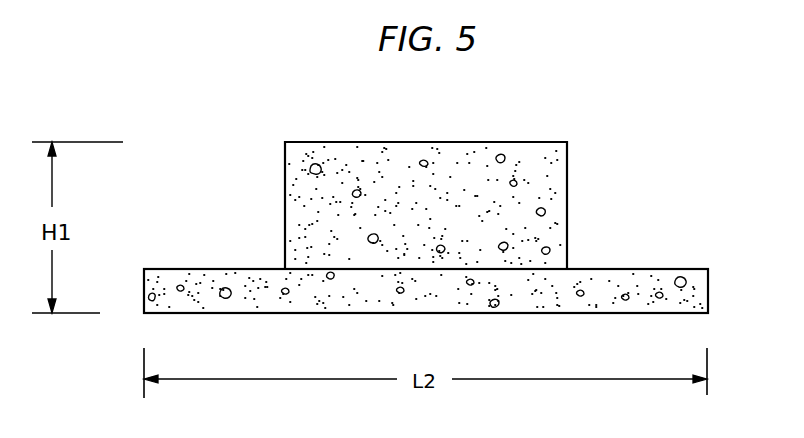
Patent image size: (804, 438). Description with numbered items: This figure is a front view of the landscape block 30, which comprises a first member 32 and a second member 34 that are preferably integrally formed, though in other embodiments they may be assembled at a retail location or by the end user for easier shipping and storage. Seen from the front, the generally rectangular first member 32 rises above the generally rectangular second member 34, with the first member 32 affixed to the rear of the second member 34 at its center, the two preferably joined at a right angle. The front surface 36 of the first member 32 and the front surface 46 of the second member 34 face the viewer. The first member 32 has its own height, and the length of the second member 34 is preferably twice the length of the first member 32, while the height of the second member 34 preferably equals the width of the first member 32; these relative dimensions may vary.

The block 30 is at (672, 202).
The first member 32 is at (364, 158).
The second member 34 is at (224, 280).
The front surface 36 is at (532, 163).
The front surface 46 is at (690, 292).